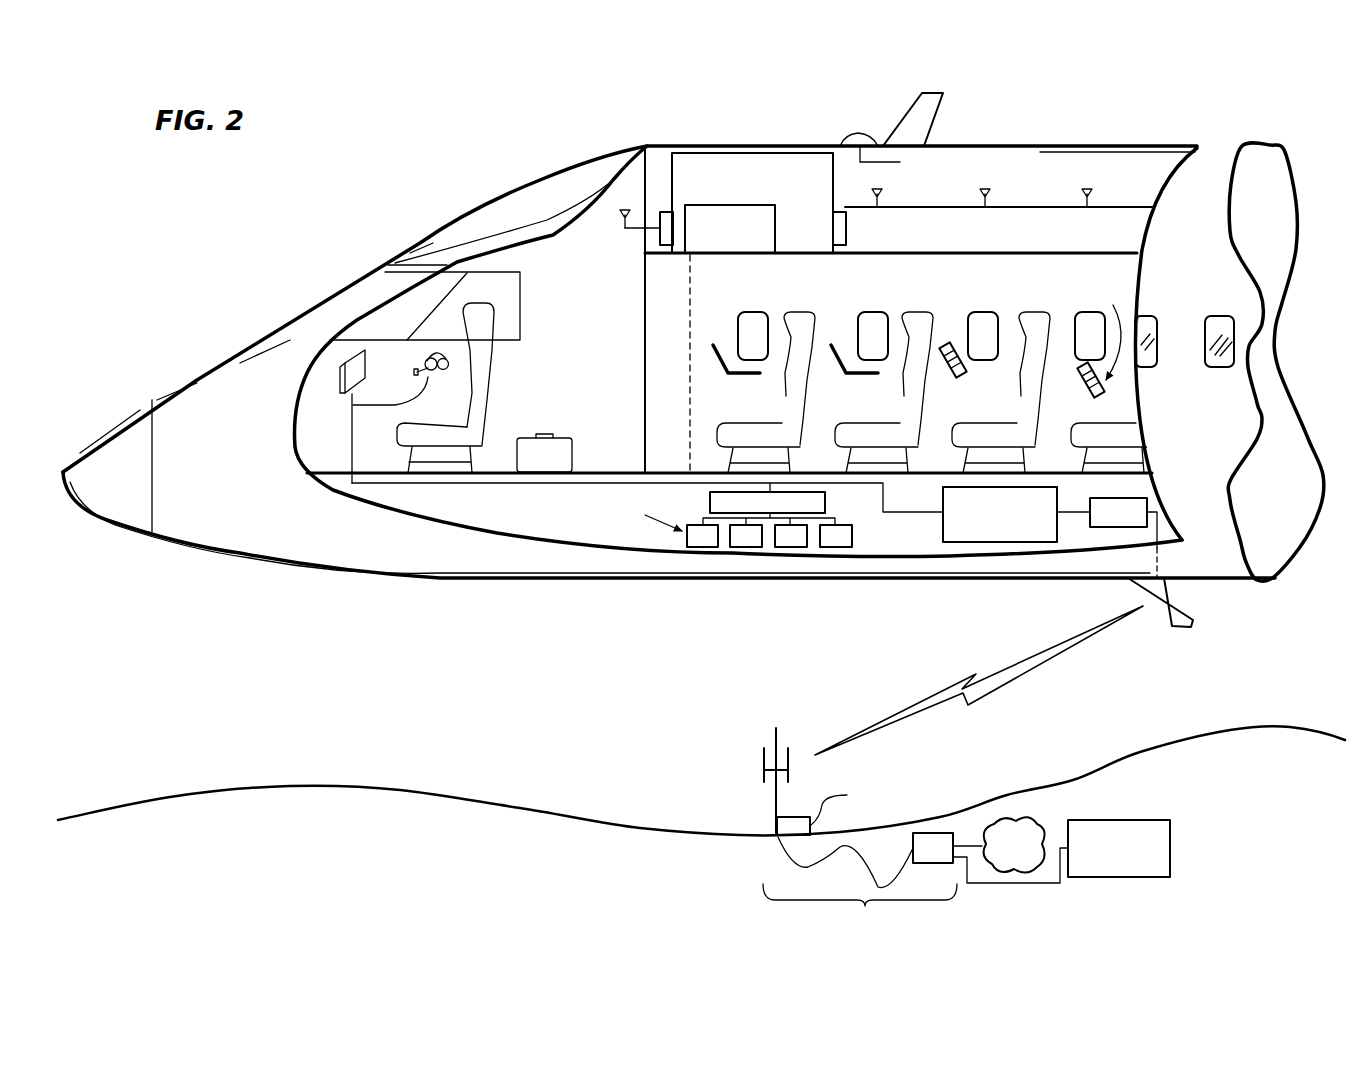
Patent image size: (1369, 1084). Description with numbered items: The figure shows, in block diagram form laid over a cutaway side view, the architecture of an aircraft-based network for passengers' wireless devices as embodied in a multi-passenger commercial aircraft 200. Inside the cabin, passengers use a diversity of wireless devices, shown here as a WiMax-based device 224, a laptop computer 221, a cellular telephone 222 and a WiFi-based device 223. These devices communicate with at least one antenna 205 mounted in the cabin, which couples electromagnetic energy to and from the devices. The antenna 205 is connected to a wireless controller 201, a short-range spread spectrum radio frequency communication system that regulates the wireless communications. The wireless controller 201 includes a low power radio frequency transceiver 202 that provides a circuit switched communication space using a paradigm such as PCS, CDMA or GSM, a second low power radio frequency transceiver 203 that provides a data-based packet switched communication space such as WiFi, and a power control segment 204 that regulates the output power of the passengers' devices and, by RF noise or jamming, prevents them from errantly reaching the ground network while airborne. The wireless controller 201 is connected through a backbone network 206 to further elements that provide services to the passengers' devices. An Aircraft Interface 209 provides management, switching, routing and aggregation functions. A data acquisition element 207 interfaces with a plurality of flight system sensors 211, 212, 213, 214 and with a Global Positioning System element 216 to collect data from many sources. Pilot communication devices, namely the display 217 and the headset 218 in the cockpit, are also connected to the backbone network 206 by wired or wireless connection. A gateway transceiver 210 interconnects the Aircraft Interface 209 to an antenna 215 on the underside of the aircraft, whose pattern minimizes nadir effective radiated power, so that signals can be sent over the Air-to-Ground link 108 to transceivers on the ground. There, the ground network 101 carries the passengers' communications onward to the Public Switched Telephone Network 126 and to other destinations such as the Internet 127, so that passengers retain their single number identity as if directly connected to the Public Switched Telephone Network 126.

The multi-passenger commercial aircraft 200 is at (203, 550).
The wireless controller 201 is at (669, 176).
The low power radio frequency transceiver 202 is at (847, 235).
The low power radio frequency transceiver 203 is at (656, 235).
The power control segment 204 is at (688, 247).
The antenna 205 is at (990, 198).
The backbone network 206 is at (473, 484).
The data acquisition element 207 is at (826, 503).
The Aircraft Interface 209 is at (1020, 543).
The gateway transceiver 210 is at (1108, 528).
The flight system sensor 211 is at (690, 548).
The flight system sensor 212 is at (735, 548).
The flight system sensor 213 is at (780, 548).
The flight system sensor 214 is at (825, 548).
The antenna 215 is at (1178, 615).
The Global Positioning System element 216 is at (850, 138).
The display 217 is at (340, 378).
The headset 218 is at (425, 360).
The laptop computer 221 is at (834, 345).
The cellular telephone 222 is at (949, 343).
The WiFi-based device 223 is at (1097, 398).
The WiMax-based device 224 is at (717, 345).
The Air-to-Ground link 108 is at (1017, 677).
The ground network 101 is at (915, 830).
The Public Switched Telephone Network 126 is at (1027, 818).
The Internet 127 is at (1137, 820).